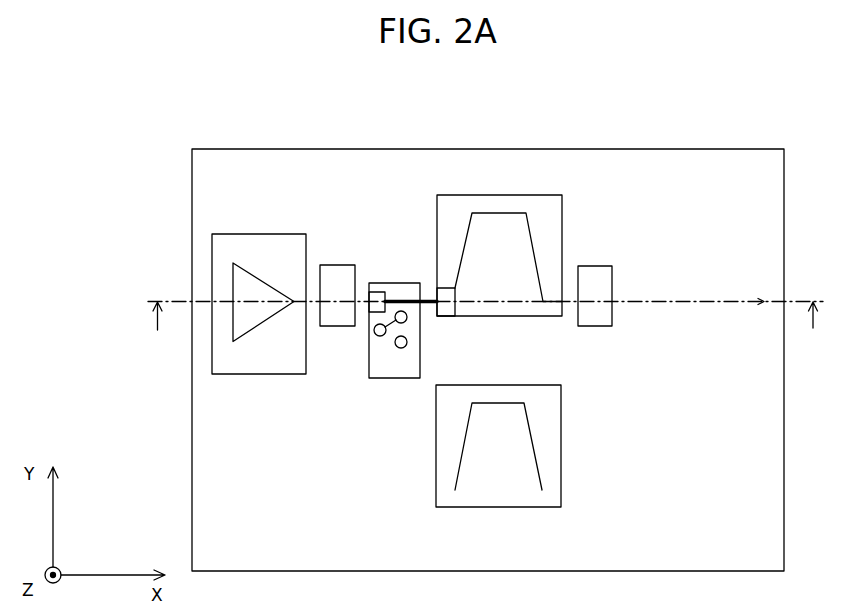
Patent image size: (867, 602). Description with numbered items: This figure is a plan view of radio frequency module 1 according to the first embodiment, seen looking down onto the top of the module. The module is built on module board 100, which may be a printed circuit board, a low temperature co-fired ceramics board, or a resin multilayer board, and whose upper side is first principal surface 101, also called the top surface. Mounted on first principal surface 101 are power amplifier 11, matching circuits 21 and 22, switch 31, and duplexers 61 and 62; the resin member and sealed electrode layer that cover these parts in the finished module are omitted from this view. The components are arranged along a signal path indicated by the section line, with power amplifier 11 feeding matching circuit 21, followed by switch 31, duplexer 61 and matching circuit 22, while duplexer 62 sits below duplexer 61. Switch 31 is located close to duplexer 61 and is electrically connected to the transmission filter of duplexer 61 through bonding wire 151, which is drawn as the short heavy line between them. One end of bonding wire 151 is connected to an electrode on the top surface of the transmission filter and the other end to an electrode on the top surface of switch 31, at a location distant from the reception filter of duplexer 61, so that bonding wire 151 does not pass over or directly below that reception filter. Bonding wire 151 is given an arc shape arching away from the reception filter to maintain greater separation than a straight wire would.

The radio frequency module 1 is at (737, 123).
The module board 100 is at (465, 149).
The first principal surface 101 is at (773, 180).
The power amplifier 11 is at (277, 234).
The matching circuit 21 is at (340, 265).
The matching circuit 22 is at (596, 266).
The switch 31 is at (404, 378).
The duplexer 61 is at (500, 195).
The duplexer 62 is at (500, 385).
The bonding wire 151 is at (430, 297).